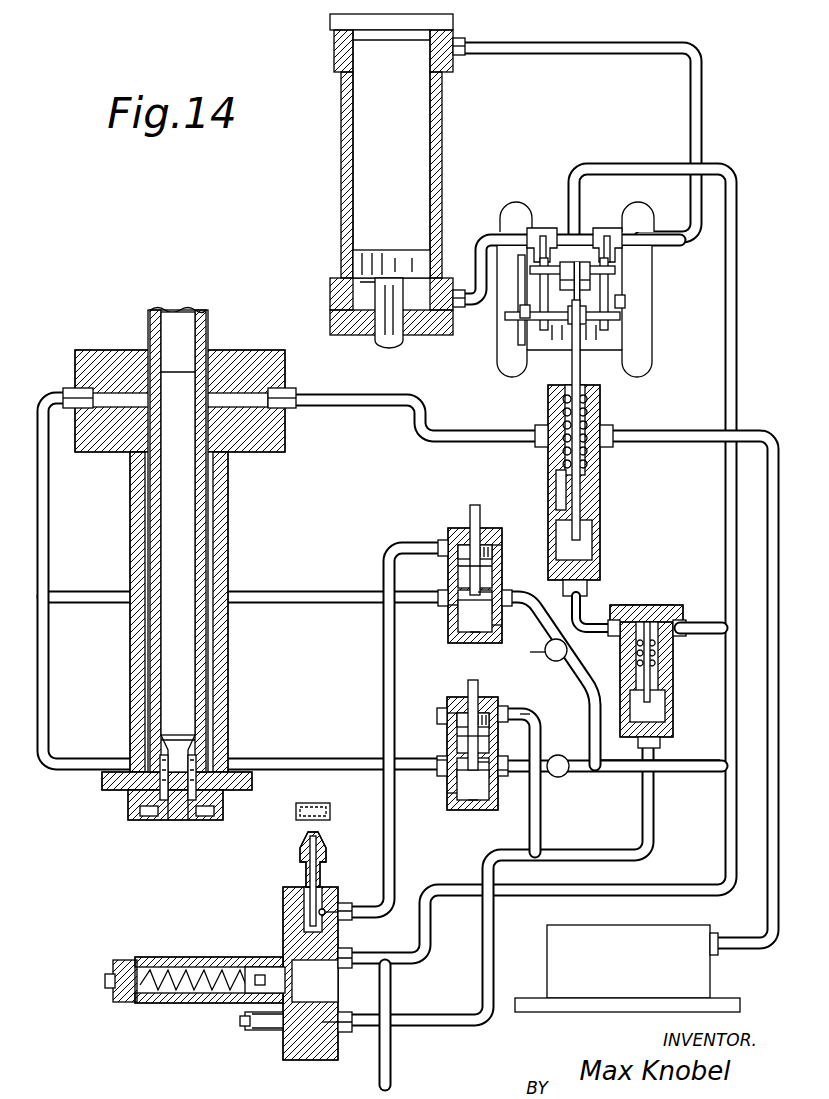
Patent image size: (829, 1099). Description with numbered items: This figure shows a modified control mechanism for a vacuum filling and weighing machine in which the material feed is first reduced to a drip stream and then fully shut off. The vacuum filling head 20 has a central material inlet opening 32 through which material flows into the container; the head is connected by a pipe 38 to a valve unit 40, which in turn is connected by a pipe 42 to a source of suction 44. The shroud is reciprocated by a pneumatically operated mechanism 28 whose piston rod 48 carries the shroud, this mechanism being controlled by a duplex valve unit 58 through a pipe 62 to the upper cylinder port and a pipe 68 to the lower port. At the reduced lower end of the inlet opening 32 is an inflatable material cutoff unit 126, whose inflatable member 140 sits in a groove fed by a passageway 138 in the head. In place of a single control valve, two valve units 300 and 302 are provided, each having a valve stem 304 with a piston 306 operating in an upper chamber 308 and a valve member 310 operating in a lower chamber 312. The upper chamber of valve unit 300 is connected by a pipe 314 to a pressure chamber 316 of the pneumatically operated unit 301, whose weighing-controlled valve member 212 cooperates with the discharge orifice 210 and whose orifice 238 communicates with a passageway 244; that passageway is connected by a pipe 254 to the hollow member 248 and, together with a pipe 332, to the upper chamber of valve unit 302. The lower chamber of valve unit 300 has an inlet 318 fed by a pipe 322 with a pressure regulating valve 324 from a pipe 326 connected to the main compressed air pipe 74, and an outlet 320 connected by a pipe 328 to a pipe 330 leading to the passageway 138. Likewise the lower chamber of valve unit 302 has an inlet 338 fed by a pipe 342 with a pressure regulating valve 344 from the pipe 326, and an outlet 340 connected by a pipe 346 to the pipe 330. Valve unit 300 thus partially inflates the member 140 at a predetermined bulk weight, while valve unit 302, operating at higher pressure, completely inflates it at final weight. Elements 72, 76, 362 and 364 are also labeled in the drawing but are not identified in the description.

The vacuum filling head 20 is at (228, 522).
The pneumatically operated mechanism 28 is at (340, 175).
The material inlet opening 32 is at (178, 566).
The pipe 38 is at (462, 432).
The valve unit 40 is at (602, 512).
The pipe 42 is at (662, 430).
The source of suction 44 is at (627, 968).
The piston rod 48 is at (372, 340).
The duplex valve unit 58 is at (556, 208).
The pipe 62 is at (703, 120).
The pipe 68 is at (490, 240).
The valve stem 72 is at (588, 244).
The compressed air pipe 74 is at (726, 730).
The drain conduit 76 is at (392, 1068).
The inflatable material cutoff unit 126 is at (198, 738).
The passageway 138 is at (148, 668).
The inflatable member 140 is at (175, 800).
The discharge orifice 210 is at (326, 832).
The valve member 212 is at (320, 804).
The orifice 238 is at (272, 1032).
The passageway 244 is at (325, 1048).
The hollow member 248 is at (676, 688).
The pipe 254 is at (655, 830).
The valve unit 300 is at (450, 528).
The pneumatically operated unit 301 is at (263, 932).
The valve unit 302 is at (455, 690).
The valve stem 304 is at (475, 507).
The piston 306 is at (490, 545).
The upper chamber 308 is at (458, 568).
The valve member 310 is at (486, 596).
The lower chamber 312 is at (494, 632).
The pipe 314 is at (383, 667).
The pressure chamber 316 is at (326, 912).
The inlet 318 is at (512, 600).
The outlet 320 is at (449, 609).
The pipe 322 is at (566, 672).
The pressure regulating valve 324 is at (545, 652).
The pipe 326 is at (666, 773).
The pipe 328 is at (322, 594).
The pipe 330 is at (50, 506).
The pipe 332 is at (541, 830).
The inlet 338 is at (500, 752).
The outlet 340 is at (447, 770).
The pipe 342 is at (512, 776).
The pressure regulating valve 344 is at (562, 757).
The pipe 346 is at (300, 758).
The port 362 is at (474, 643).
The chamber 364 is at (473, 703).